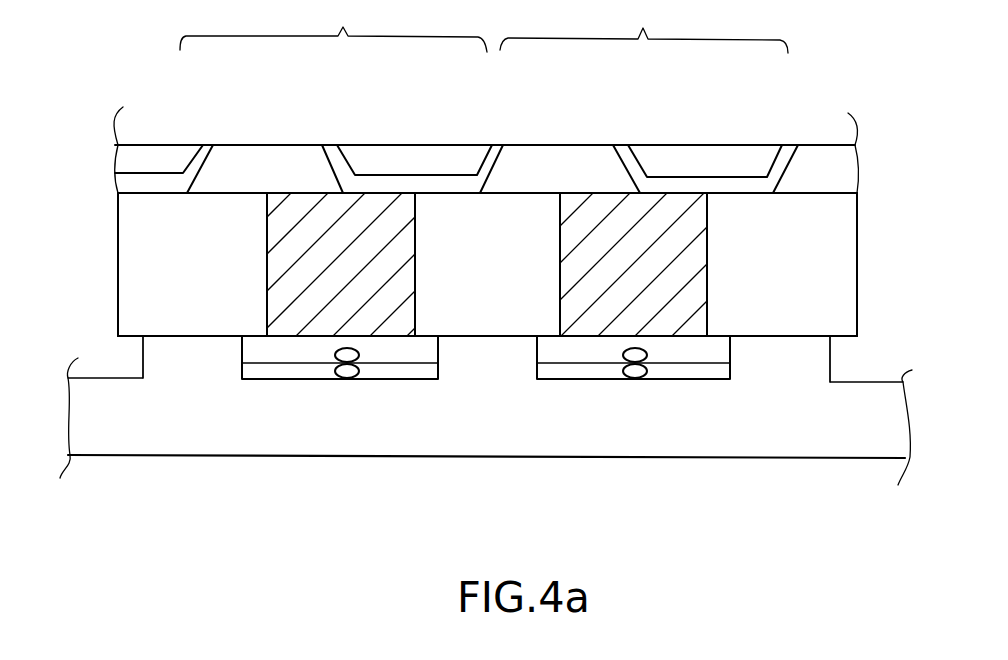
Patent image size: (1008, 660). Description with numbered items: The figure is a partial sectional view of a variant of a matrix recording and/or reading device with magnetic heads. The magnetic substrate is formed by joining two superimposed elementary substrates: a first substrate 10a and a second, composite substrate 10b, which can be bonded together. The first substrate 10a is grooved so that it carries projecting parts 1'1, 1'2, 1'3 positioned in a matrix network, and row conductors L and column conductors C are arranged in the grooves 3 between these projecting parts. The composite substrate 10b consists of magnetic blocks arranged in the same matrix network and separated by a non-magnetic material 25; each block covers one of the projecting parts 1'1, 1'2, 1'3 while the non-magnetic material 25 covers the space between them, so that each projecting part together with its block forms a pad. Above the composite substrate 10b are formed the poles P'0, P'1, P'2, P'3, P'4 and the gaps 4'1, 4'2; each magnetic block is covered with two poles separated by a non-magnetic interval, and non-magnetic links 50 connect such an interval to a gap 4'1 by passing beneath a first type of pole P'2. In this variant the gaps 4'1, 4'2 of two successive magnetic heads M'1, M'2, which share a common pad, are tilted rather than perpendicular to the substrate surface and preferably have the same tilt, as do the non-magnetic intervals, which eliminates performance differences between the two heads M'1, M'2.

The first elementary substrate 10a is at (723, 422).
The second elementary substrate 10b is at (808, 278).
The non-magnetic link 50 is at (443, 185).
The non-magnetic material 25 is at (280, 302).
The pole P'0 is at (159, 125).
The pole P'1 is at (267, 115).
The pole P'2 is at (414, 127).
The pole P'3 is at (558, 117).
The pole P'4 is at (705, 130).
The gap 4'1 is at (342, 132).
The gap 4'2 is at (637, 132).
The magnetic head M'1 is at (333, 27).
The magnetic head M'2 is at (644, 28).
The projecting part 1'1 is at (175, 423).
The projecting part 1'2 is at (487, 420).
The projecting part 1'3 is at (805, 420).
The groove 3 is at (377, 380).
The column conductor C is at (410, 353).
The row conductor L is at (313, 370).